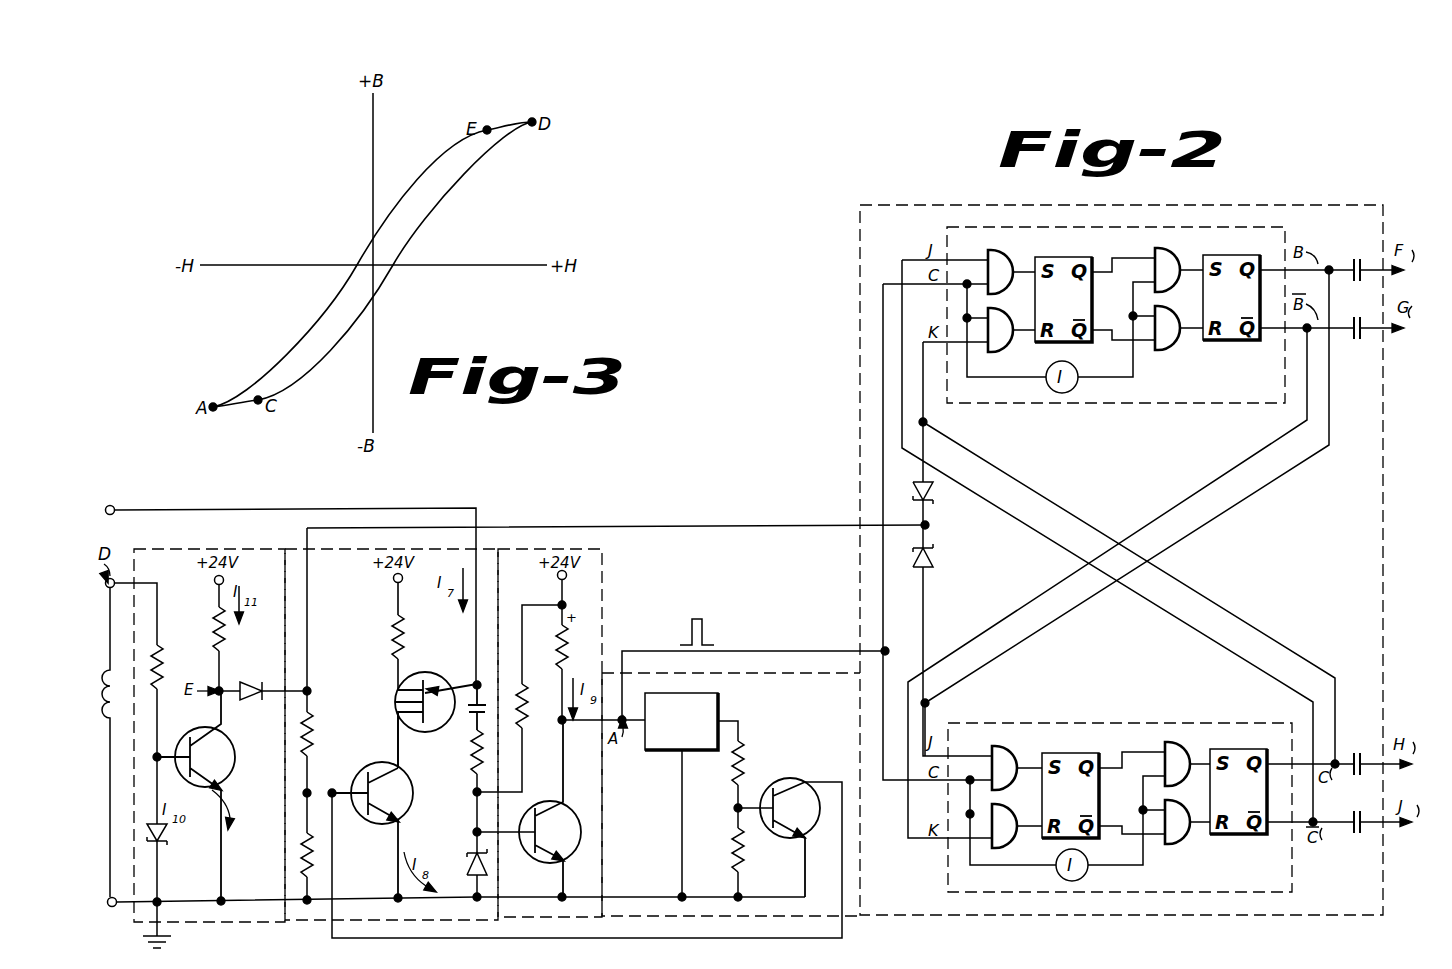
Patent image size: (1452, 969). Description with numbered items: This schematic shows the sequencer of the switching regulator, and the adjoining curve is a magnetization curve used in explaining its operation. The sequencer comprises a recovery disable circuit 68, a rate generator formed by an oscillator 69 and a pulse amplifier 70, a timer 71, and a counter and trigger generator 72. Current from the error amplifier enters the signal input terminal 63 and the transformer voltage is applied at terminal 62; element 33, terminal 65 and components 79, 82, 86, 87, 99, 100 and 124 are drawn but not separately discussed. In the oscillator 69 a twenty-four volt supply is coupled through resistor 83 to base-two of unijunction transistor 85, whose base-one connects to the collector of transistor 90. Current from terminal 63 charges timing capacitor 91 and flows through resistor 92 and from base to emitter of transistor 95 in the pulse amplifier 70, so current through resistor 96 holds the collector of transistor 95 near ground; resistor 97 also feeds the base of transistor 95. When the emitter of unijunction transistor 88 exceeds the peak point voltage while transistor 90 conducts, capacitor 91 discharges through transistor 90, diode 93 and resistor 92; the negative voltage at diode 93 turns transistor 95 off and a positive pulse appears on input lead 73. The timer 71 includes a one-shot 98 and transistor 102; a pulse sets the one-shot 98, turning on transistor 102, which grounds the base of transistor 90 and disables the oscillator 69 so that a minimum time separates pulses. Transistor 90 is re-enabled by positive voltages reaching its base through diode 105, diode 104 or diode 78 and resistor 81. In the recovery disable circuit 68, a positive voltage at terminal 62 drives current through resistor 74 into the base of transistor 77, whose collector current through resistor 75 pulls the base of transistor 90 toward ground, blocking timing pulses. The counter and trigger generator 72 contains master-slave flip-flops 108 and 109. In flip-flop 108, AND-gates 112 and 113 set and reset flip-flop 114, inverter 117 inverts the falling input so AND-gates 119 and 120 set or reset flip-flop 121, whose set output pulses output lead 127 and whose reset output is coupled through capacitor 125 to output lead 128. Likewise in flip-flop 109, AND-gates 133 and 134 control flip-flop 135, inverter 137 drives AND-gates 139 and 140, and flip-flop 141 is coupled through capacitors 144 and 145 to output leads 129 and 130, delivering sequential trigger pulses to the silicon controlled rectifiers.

The pickup coil 33 is at (106, 720).
The terminal 62 is at (118, 612).
The signal input terminal 63 is at (286, 584).
The common terminal 65 is at (108, 898).
The recovery disable circuit 68 is at (171, 548).
The oscillator 69 is at (295, 550).
The pulse amplifier 70 is at (602, 556).
The timer 71 is at (841, 675).
The counter and trigger generator 72 is at (892, 208).
The signal-input lead 73 is at (775, 651).
The resistor 74 is at (164, 663).
The resistor 75 is at (212, 623).
The transistor 77 is at (229, 740).
The diode 78 is at (248, 680).
The zener diode 79 is at (164, 838).
The resistor 81 is at (311, 755).
The resistor 82 is at (328, 872).
The resistor 83 is at (390, 630).
The unijunction transistor 85 is at (385, 704).
The base terminal 86 is at (410, 679).
The collector 87 is at (414, 740).
The unijunction transistor 88 is at (435, 679).
The transistor 90 is at (419, 802).
The timing capacitor 91 is at (472, 714).
The resistor 92 is at (471, 762).
The diode 93 is at (466, 860).
The transistor 95 is at (572, 813).
The resistor 96 is at (558, 646).
The resistor 97 is at (525, 730).
The one-shot 98 is at (719, 696).
The resistor 99 is at (747, 753).
The resistor 100 is at (733, 860).
The transistor 102 is at (793, 780).
The diode 104 is at (937, 502).
The diode 105 is at (935, 558).
The master-slave flip-flop 108 is at (993, 230).
The master-slave flip-flop 109 is at (996, 722).
The AND-gate 112 is at (1008, 262).
The AND-gate 113 is at (1008, 320).
The flip-flop 114 is at (1062, 257).
The inverter 117 is at (1078, 384).
The AND-gate 119 is at (1163, 255).
The AND-gate 120 is at (1178, 350).
The slave flip-flop 121 is at (1228, 258).
The capacitor 124 is at (1364, 258).
The capacitor 125 is at (1364, 338).
The output lead 127 is at (1391, 283).
The output lead 128 is at (1390, 340).
The output lead 129 is at (1392, 780).
The output lead 130 is at (1393, 838).
The AND-gate 133 is at (1012, 756).
The AND-gate 134 is at (1012, 818).
The master flip-flop 135 is at (1066, 749).
The inverter 137 is at (1086, 873).
The AND-gate 139 is at (1168, 749).
The AND-gate 140 is at (1188, 846).
The slave flip-flop 141 is at (1238, 750).
The capacitor 144 is at (1377, 762).
The capacitor 145 is at (1364, 834).